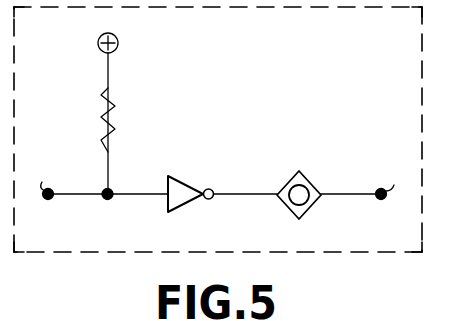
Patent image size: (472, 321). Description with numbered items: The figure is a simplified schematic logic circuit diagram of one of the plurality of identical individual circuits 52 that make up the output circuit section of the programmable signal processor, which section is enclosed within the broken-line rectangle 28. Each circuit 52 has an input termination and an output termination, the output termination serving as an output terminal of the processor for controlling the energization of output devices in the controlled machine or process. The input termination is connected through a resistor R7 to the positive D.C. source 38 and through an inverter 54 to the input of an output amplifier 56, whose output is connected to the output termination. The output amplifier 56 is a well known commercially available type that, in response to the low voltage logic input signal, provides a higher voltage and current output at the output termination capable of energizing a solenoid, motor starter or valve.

The broken-line rectangle 28 is at (340, 252).
The individual circuit 52 is at (303, 107).
The D.C. source 38 is at (117, 47).
The resistor R7 is at (116, 109).
The inverter 54 is at (188, 186).
The output amplifier 56 is at (287, 184).